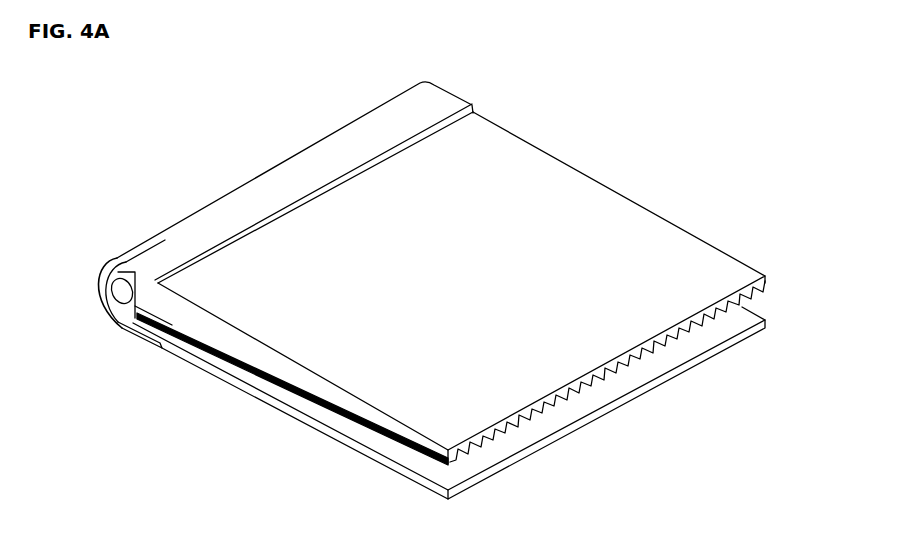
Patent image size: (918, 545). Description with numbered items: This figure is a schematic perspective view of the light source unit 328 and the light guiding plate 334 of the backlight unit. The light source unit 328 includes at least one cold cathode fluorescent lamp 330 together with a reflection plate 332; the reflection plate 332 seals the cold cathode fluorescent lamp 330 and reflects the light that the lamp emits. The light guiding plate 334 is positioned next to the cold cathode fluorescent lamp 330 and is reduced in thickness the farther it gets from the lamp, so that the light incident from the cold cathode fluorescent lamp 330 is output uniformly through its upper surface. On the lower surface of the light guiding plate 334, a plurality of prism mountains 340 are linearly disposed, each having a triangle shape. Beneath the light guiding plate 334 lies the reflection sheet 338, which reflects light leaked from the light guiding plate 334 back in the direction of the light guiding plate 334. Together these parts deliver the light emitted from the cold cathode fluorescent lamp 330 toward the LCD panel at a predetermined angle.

The light source unit 328 is at (93, 268).
The reflection plate 332 is at (129, 250).
The cold cathode fluorescent lamp 330 is at (127, 297).
The light guiding plate 334 is at (770, 274).
The reflection sheet 338 is at (768, 318).
The prism mountains 340 is at (669, 343).